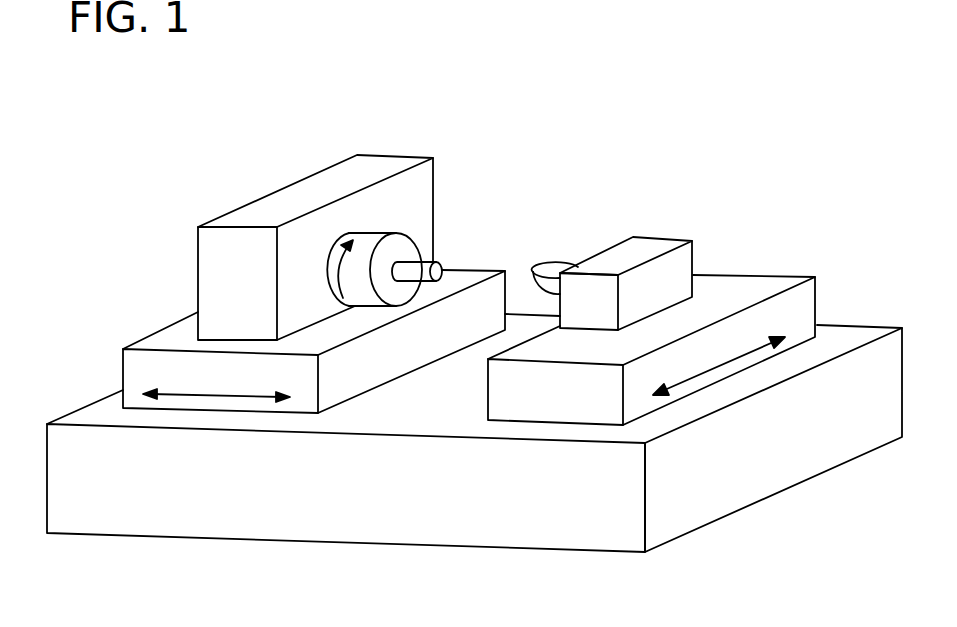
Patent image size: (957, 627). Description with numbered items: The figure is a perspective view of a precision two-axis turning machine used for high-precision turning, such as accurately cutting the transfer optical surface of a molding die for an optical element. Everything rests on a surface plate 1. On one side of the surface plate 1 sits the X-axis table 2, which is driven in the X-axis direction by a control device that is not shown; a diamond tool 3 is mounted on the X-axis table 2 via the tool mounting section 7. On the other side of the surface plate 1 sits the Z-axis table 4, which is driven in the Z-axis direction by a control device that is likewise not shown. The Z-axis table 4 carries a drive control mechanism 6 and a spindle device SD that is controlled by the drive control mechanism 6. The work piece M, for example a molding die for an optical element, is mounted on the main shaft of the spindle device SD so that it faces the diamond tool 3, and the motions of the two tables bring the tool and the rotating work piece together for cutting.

The surface plate 1 is at (797, 463).
The X-axis table 2 is at (805, 305).
The diamond tool 3 is at (548, 270).
The Z-axis table 4 is at (130, 365).
The drive control mechanism 6 is at (397, 155).
The tool mounting section 7 is at (685, 260).
The spindle device SD is at (372, 242).
The work piece M is at (422, 258).